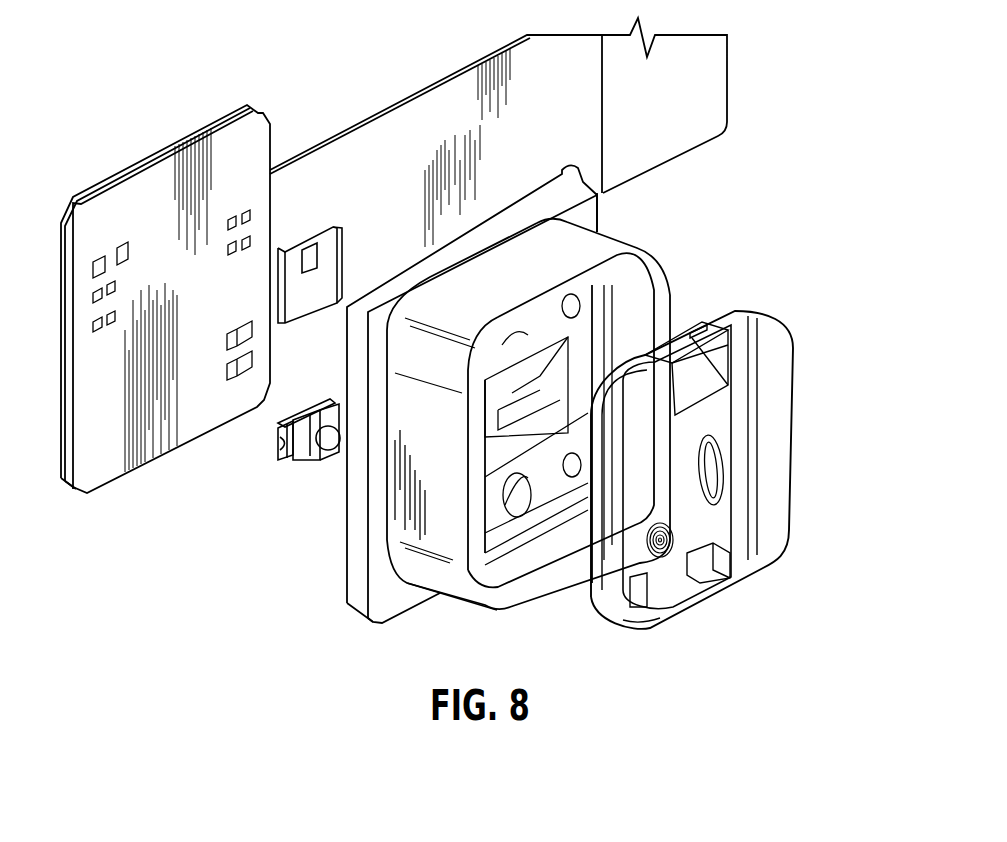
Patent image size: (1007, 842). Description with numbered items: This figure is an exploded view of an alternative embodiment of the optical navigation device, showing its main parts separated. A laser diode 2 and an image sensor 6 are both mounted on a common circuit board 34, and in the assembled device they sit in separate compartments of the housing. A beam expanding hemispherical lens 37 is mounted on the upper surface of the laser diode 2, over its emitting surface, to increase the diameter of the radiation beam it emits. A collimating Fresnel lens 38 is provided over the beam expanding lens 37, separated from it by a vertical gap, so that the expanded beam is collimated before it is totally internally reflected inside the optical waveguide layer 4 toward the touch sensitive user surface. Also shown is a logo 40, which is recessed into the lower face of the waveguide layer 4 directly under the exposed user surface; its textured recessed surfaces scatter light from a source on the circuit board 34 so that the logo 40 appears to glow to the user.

The common circuit board 34 is at (132, 197).
The image sensor 6 is at (308, 250).
The laser diode 2 is at (283, 437).
The beam expanding hemispherical lens 37 is at (331, 440).
The optical waveguide layer 4 is at (777, 418).
The logo 40 is at (637, 496).
The collimating Fresnel lens 38 is at (662, 557).